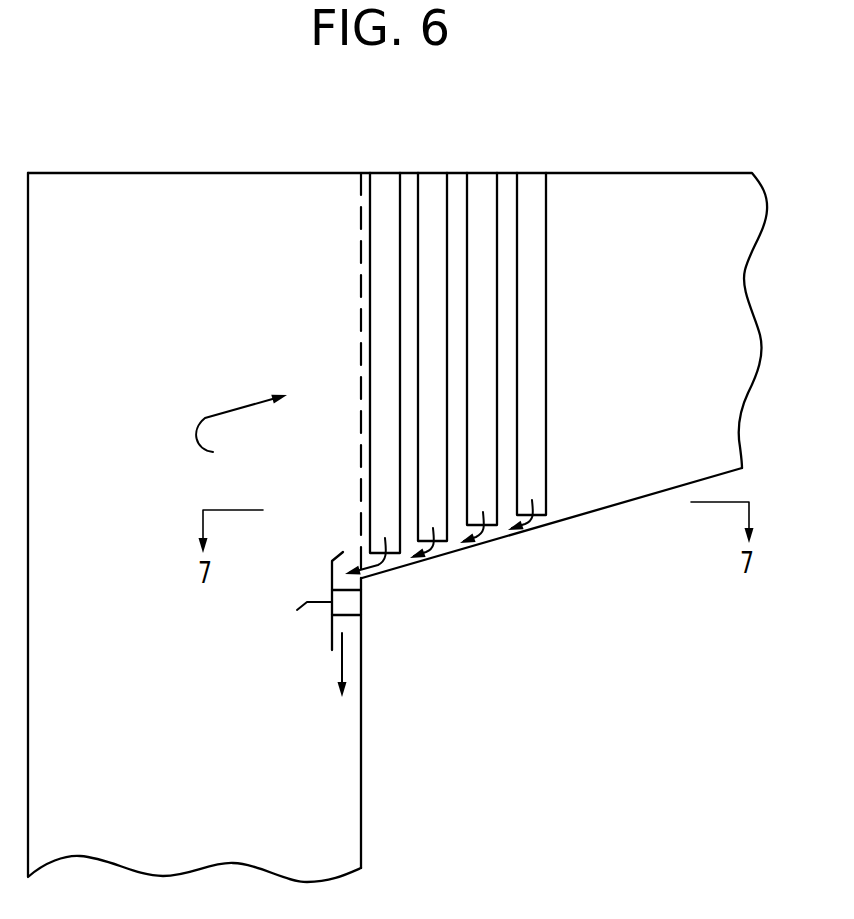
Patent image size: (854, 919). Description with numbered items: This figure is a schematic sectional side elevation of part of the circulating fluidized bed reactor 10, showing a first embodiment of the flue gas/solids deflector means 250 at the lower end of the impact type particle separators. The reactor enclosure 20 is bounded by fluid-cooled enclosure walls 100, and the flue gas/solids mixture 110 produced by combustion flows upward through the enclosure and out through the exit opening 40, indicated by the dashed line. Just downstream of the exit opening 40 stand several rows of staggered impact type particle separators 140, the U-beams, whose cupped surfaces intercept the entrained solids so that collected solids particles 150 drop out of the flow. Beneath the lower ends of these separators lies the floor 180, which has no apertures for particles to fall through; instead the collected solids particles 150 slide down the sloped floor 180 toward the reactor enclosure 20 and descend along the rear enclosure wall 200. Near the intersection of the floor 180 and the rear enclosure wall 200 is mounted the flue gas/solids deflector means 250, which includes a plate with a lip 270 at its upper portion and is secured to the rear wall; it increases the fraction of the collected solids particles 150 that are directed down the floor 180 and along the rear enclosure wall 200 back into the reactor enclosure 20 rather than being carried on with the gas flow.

The circulating fluidized bed reactor 10 is at (585, 665).
The reactor enclosure 20 is at (128, 833).
The exit opening 40 is at (358, 231).
The enclosure walls 100 is at (216, 173).
The flue gas/solids mixture 110 is at (242, 408).
The staggered impact type particle separators 140 is at (532, 192).
The collected solids particles 150 is at (342, 660).
The floor 180 is at (612, 505).
The rear enclosure wall 200 is at (361, 722).
The flue gas/solids deflector means 250 is at (280, 591).
The lip 270 is at (343, 551).